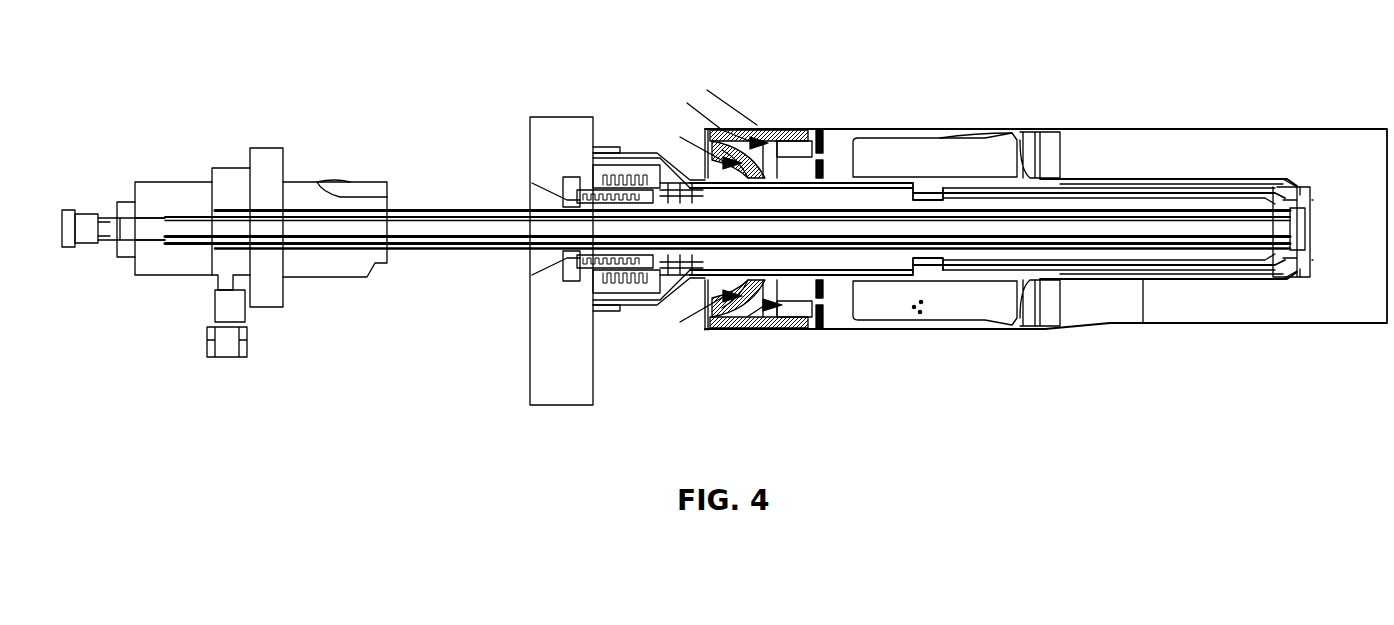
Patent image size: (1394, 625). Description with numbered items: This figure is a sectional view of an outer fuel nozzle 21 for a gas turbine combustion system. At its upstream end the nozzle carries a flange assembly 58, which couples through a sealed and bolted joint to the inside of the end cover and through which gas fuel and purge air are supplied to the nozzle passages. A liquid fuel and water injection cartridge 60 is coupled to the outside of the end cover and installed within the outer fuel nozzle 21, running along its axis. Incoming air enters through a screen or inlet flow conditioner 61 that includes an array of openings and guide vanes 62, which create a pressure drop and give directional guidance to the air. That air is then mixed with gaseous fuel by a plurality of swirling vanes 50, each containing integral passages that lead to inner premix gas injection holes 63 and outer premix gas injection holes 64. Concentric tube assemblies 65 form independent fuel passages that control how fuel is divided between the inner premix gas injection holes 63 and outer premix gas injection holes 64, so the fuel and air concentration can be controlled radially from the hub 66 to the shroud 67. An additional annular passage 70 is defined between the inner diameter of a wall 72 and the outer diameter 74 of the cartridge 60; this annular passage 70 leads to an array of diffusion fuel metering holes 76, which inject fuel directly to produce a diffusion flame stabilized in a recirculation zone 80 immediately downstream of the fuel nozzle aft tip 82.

The outer fuel nozzle 21 is at (540, 50).
The swirling vanes 50 is at (976, 312).
The flange assembly 58 is at (543, 392).
The liquid fuel and water injection cartridge 60 is at (302, 181).
The inlet flow conditioner 61 is at (787, 332).
The guide vanes 62 is at (738, 325).
The inner premix gas injection holes 63 is at (923, 175).
The outer premix gas injection holes 64 is at (910, 145).
The concentric tube assemblies 65 is at (745, 195).
The hub 66 is at (1092, 178).
The shroud 67 is at (1265, 325).
The annular passage 70 is at (1198, 200).
The wall 72 is at (1153, 183).
The outer diameter 74 is at (1243, 203).
The diffusion fuel metering holes 76 is at (1303, 196).
The recirculation zone 80 is at (1366, 269).
The fuel nozzle aft tip 82 is at (1310, 183).